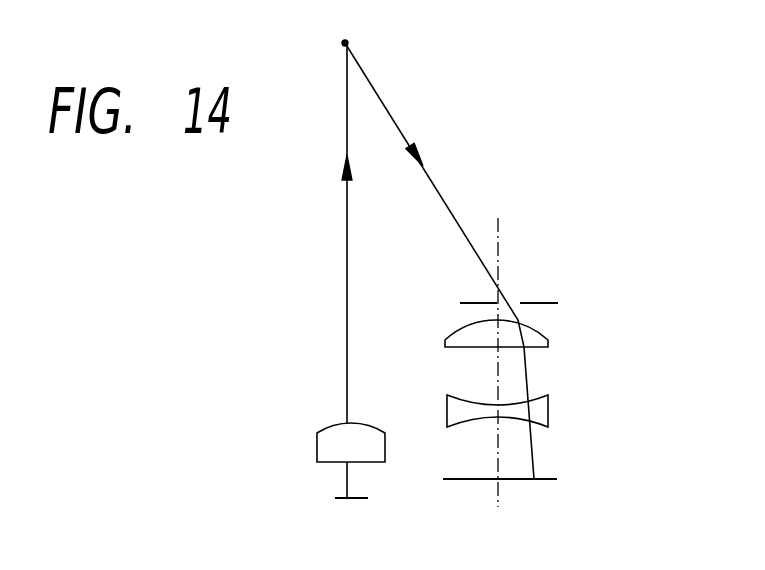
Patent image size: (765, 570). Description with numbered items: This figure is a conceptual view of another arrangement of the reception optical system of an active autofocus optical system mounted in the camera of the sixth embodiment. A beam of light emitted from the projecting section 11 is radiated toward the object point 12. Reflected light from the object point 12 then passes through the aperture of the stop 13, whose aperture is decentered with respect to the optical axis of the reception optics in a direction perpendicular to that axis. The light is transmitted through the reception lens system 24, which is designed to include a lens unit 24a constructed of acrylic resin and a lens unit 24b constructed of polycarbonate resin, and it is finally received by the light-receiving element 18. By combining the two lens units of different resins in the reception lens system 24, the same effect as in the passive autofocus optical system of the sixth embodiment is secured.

The projecting section 11 is at (296, 417).
The object point 12 is at (349, 40).
The stop 13 is at (548, 303).
The light-receiving element 18 is at (548, 479).
The reception lens system 24 is at (567, 366).
The lens unit 24a is at (543, 338).
The lens unit 24b is at (537, 410).